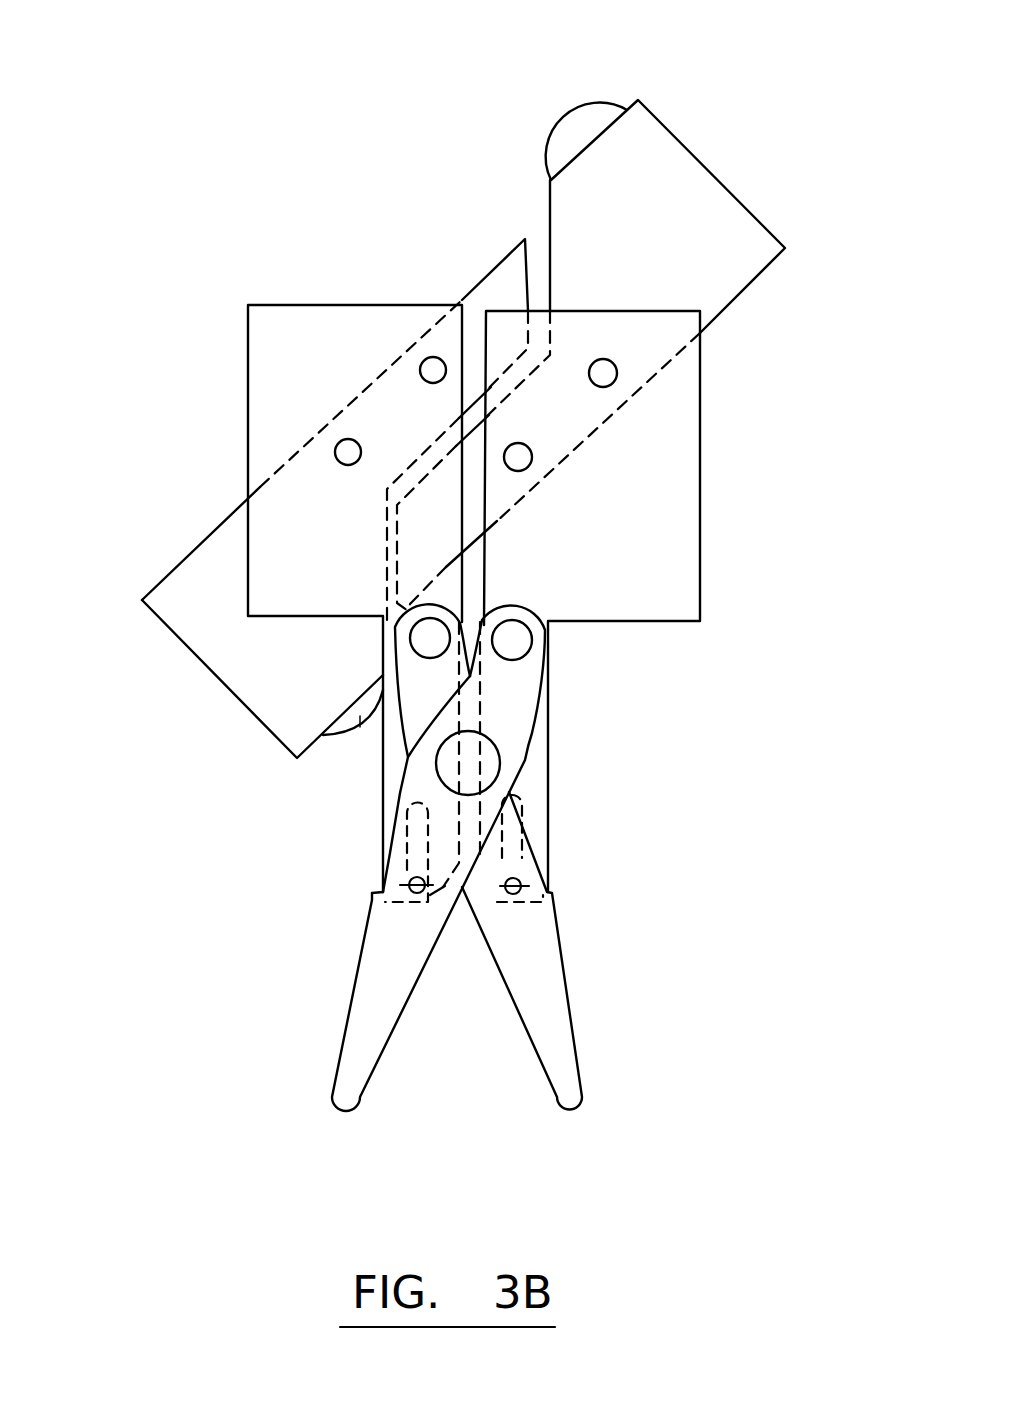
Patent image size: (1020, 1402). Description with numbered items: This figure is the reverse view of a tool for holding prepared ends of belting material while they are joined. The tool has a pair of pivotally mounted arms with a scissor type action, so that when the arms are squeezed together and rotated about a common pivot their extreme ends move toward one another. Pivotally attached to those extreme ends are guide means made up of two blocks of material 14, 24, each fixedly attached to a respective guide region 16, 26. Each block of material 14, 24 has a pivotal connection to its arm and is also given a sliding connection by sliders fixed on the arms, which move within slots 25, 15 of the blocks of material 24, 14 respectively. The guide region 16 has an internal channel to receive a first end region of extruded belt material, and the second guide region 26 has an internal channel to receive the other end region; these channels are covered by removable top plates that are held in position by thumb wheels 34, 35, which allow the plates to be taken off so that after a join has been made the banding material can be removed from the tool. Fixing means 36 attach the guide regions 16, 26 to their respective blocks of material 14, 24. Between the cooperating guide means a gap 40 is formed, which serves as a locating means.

The block of material 14 is at (282, 330).
The slot 15 is at (415, 848).
The guide region 16 is at (188, 568).
The block of material 24 is at (675, 545).
The slot 25 is at (507, 840).
The guide region 26 is at (730, 275).
The thumb wheel 34 is at (363, 718).
The thumb wheel 35 is at (575, 128).
The fixing means 36 is at (429, 360).
The gap 40 is at (472, 412).